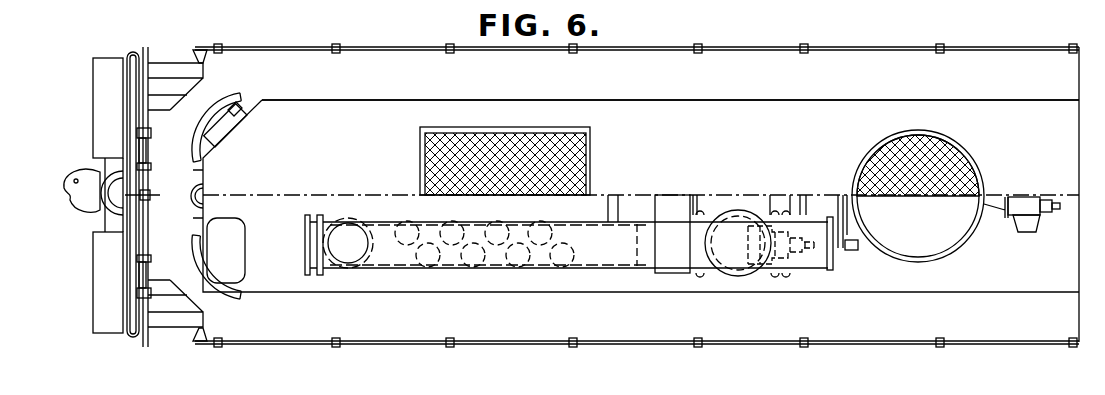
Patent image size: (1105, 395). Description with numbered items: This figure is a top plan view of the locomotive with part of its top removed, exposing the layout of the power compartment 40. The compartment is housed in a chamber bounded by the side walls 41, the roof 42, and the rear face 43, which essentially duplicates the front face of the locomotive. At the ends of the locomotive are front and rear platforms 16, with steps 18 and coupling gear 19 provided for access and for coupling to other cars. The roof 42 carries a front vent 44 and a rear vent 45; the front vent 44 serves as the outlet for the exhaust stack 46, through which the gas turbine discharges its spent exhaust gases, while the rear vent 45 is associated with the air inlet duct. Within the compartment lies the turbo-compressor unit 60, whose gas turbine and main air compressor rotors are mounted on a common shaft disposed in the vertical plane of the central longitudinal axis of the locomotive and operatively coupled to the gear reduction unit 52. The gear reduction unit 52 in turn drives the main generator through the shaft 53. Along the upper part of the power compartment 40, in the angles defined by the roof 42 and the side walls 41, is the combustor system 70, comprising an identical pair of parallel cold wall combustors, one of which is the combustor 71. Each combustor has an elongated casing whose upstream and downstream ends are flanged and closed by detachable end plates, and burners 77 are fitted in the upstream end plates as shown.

The front and rear platforms 16 is at (170, 202).
The steps 18 is at (173, 68).
The coupling gear 19 is at (86, 213).
The power compartment 40 is at (775, 169).
The side walls 41 is at (640, 103).
The roof 42 is at (765, 108).
The rear face 43 is at (207, 243).
The front vent 44 is at (963, 153).
The rear vent 45 is at (592, 153).
The exhaust stack 46 is at (950, 233).
The gear reduction unit 52 is at (1028, 223).
The shaft 53 is at (1073, 205).
The turbo-compressor unit 60 is at (745, 276).
The combustor system 70 is at (806, 270).
The cold wall combustor 71 is at (492, 270).
The burners 77 is at (852, 250).